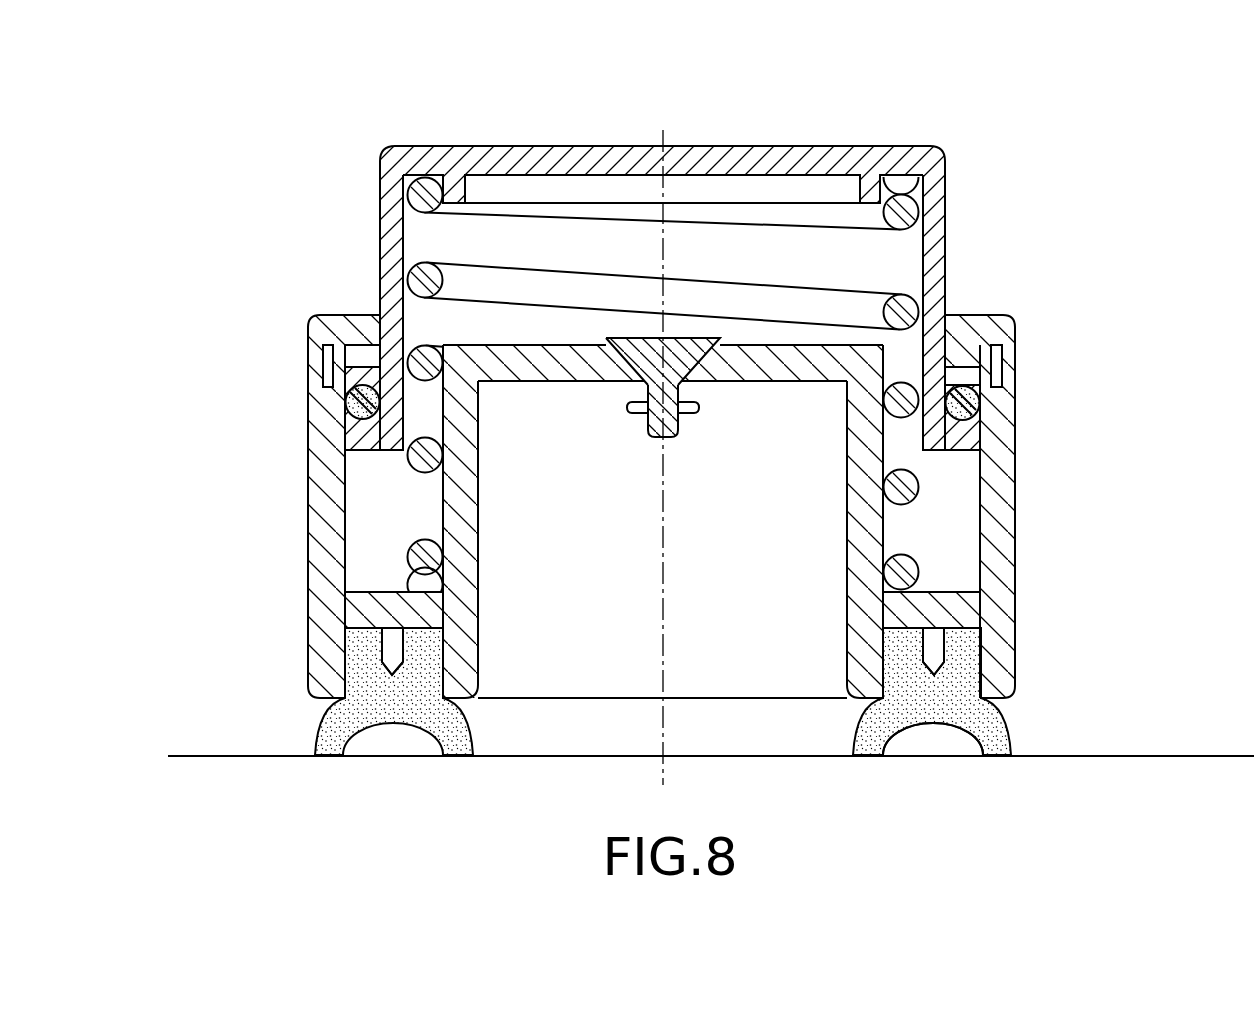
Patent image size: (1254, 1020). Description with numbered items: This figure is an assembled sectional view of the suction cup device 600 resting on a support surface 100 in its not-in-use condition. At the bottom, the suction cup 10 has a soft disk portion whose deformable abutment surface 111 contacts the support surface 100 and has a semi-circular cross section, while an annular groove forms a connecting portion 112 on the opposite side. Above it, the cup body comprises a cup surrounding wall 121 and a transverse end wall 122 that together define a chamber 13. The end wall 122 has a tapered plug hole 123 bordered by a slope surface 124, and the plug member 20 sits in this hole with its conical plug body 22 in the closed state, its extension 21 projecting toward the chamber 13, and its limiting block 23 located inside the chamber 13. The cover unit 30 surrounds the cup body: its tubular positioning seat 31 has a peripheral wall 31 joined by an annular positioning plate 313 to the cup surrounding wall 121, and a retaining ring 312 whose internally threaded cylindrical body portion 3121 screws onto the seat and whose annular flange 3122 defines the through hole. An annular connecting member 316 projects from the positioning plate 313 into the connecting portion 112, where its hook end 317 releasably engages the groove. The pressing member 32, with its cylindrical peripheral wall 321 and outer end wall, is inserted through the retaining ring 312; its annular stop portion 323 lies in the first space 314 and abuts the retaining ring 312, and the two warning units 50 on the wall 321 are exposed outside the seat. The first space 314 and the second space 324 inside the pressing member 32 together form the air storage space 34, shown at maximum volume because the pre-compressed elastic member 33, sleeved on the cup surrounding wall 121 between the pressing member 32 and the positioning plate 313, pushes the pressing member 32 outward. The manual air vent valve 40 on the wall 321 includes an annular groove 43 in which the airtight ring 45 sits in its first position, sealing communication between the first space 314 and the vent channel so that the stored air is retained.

The suction cup device 600 is at (936, 128).
The pressing member 32 is at (590, 146).
The cylindrical peripheral wall 321 is at (935, 291).
The second space 324 is at (892, 257).
The warning unit 50 is at (378, 201).
The air storage space 34 is at (476, 232).
The elastic member 33 is at (908, 214).
The slope surface 124 is at (577, 345).
The end wall 122 is at (803, 352).
The plug hole 123 is at (745, 345).
The cup surrounding wall 121 is at (873, 459).
The chamber 13 is at (812, 512).
The plug member 20 is at (640, 330).
The plug body 22 is at (686, 352).
The extension 21 is at (650, 396).
The limiting block 23 is at (690, 416).
The cover unit 30 is at (306, 448).
The positioning seat 31 is at (308, 556).
The retaining ring 312 is at (318, 318).
The annular flange 3122 is at (352, 318).
The cylindrical body portion 3121 is at (325, 352).
The annular groove 43 is at (363, 372).
The manual air vent valve 40 is at (343, 402).
The first space 314 is at (383, 522).
The annular positioning plate 313 is at (372, 611).
The annular stop portion 323 is at (1003, 370).
The airtight ring 45 is at (982, 408).
The suction cup 10 is at (1012, 712).
The annular connecting member 316 is at (392, 657).
The hook end 317 is at (383, 676).
The connecting portion 112 is at (943, 658).
The abutment surface 111 is at (942, 722).
The support surface 100 is at (1222, 750).